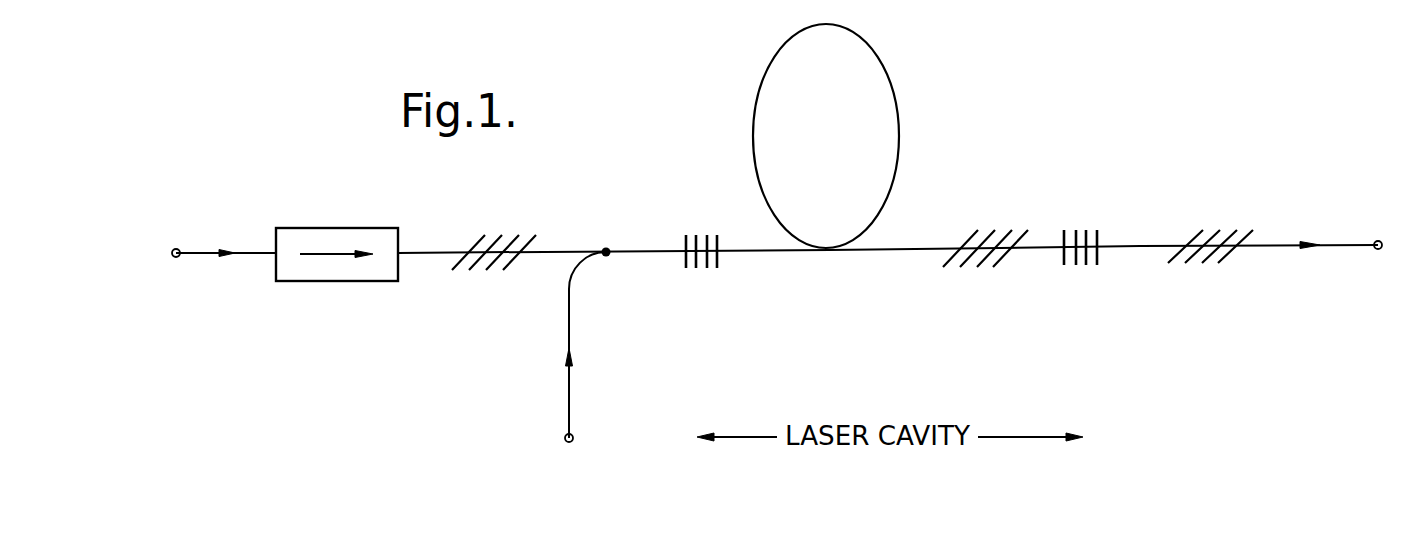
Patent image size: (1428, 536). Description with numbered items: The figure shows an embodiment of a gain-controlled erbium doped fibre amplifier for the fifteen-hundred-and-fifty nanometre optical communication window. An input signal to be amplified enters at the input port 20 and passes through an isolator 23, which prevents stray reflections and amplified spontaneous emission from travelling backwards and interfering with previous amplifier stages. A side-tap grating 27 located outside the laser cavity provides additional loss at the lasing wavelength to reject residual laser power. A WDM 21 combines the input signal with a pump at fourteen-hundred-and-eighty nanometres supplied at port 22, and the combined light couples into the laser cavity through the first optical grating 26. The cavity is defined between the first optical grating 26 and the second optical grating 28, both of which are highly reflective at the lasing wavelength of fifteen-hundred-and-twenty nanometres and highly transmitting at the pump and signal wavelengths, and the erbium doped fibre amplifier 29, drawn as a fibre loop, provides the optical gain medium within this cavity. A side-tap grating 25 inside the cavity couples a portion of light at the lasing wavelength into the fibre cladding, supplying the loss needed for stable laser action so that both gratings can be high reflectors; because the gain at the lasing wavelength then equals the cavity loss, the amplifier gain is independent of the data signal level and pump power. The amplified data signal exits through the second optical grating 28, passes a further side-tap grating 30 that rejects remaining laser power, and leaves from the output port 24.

The input port 20 is at (176, 258).
The WDM 21 is at (606, 256).
The pump input port 22 is at (569, 443).
The isolator 23 is at (332, 281).
The output port 24 is at (1378, 250).
The side-tap grating 25 is at (973, 267).
The first optical grating 26 is at (718, 236).
The side-tap grating 27 is at (517, 237).
The second optical grating 28 is at (1080, 230).
The erbium doped fibre amplifier 29 is at (886, 66).
The side-tap grating 30 is at (1228, 258).